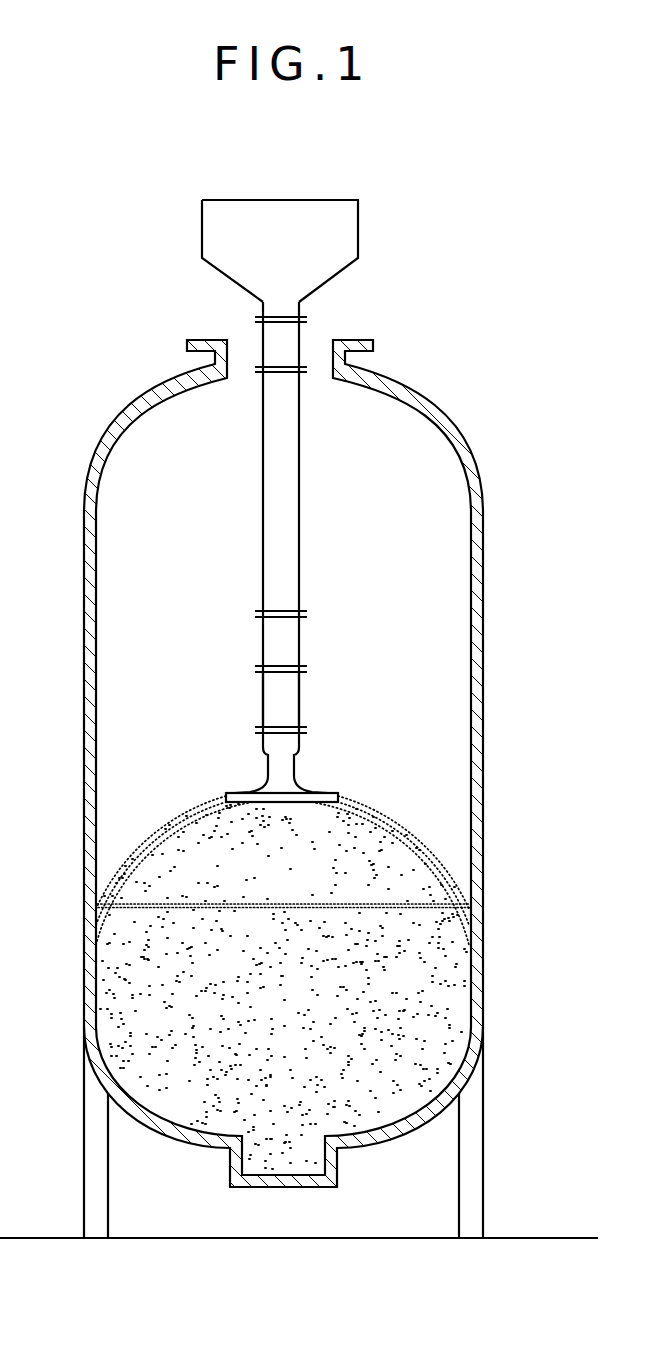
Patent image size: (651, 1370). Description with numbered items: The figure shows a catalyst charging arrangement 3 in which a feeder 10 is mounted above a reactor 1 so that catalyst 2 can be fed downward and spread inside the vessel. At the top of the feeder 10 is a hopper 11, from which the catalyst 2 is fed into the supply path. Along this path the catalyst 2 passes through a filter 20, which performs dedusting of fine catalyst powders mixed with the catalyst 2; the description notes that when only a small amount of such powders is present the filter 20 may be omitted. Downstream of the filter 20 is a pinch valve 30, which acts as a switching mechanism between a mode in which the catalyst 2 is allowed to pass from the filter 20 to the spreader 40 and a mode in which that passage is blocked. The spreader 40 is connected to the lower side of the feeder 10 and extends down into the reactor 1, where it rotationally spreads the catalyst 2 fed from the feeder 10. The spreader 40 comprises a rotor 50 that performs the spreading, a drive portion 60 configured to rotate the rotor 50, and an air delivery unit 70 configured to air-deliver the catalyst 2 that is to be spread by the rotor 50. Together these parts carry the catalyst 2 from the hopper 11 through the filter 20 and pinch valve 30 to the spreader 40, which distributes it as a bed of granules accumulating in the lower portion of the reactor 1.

The reactor 1 is at (443, 400).
The catalyst 2 is at (358, 927).
The charging apparatus 3 is at (350, 170).
The feeder 10 is at (125, 268).
The hopper 11 is at (202, 222).
The filter 20 is at (252, 523).
The pinch valve 30 is at (252, 640).
The spreader 40 is at (237, 786).
The rotor 50 is at (292, 812).
The drive portion 60 is at (315, 692).
The air delivery unit 70 is at (315, 755).